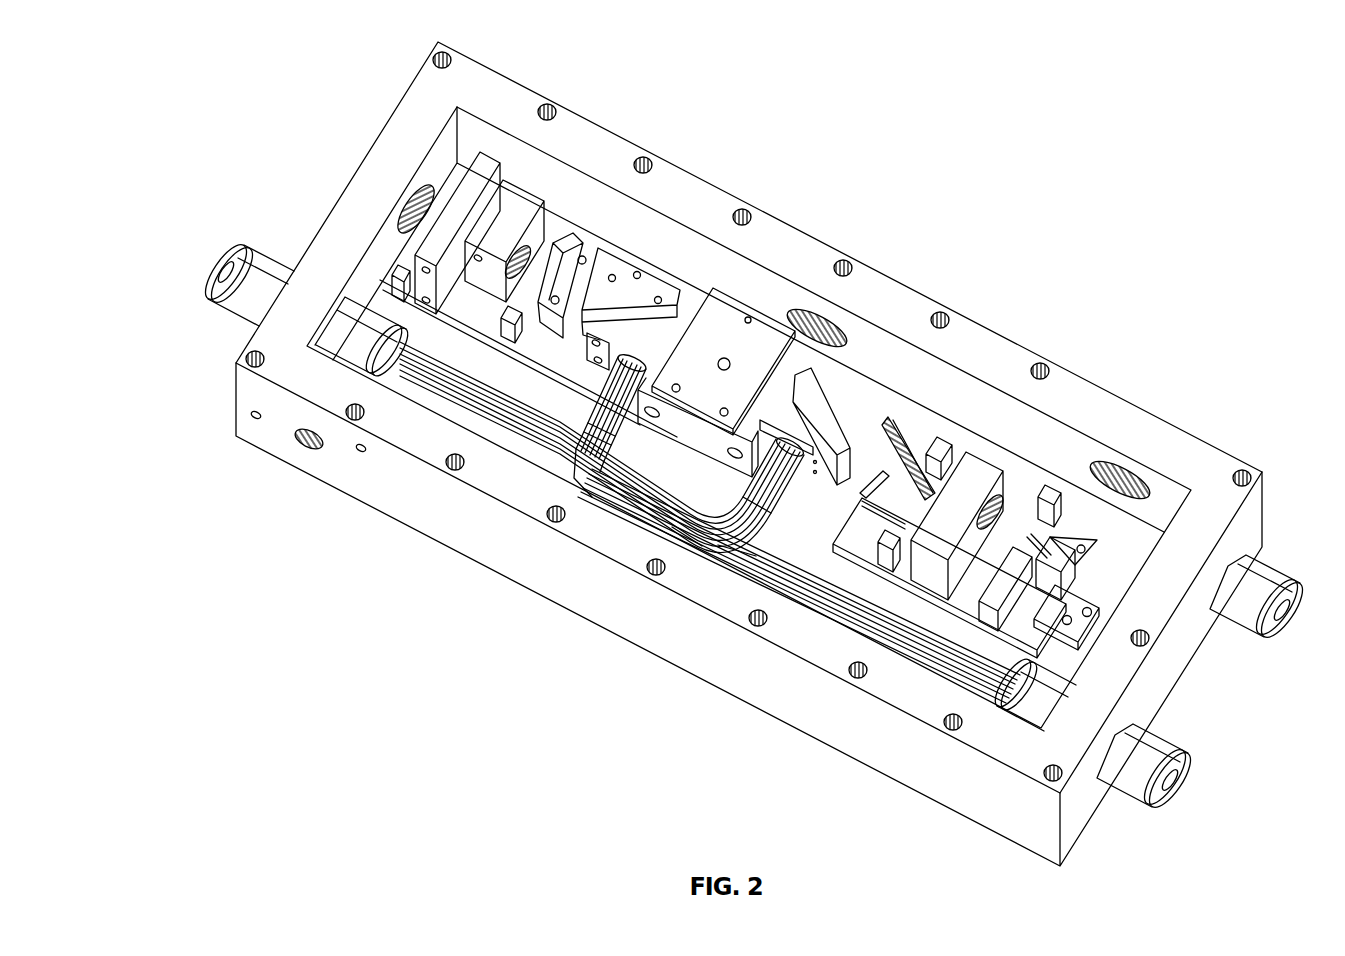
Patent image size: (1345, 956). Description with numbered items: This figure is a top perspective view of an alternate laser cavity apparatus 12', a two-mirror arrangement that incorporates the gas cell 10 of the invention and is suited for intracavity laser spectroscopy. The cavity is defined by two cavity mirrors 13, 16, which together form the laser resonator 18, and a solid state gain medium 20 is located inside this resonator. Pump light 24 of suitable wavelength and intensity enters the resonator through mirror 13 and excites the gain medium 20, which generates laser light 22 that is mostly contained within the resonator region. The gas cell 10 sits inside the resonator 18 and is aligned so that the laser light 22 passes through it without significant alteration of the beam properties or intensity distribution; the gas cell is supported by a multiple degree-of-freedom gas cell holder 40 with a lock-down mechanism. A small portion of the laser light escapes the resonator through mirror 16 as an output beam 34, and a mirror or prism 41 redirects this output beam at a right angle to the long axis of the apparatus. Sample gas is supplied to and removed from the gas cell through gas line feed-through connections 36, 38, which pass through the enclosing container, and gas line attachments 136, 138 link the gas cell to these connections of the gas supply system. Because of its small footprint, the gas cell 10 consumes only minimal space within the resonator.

The pump light 24 is at (749, 454).
The gas line feed-through connection 36 is at (236, 240).
The cavity mirror 13 is at (533, 194).
The solid state gain medium 20 is at (657, 229).
The gas cell holder 40 is at (820, 320).
The two-mirror laser cavity 12' is at (728, 279).
The gas cell 10 is at (826, 379).
The cavity mirror 16 is at (993, 442).
The laser light 22 is at (924, 483).
The output beam 34 is at (806, 417).
The mirror or prism 41 is at (1183, 557).
The gas line feed-through connection 38 is at (1203, 684).
The gas line attachment 136 is at (603, 496).
The laser resonator 18 is at (687, 606).
The gas line attachment 138 is at (797, 557).